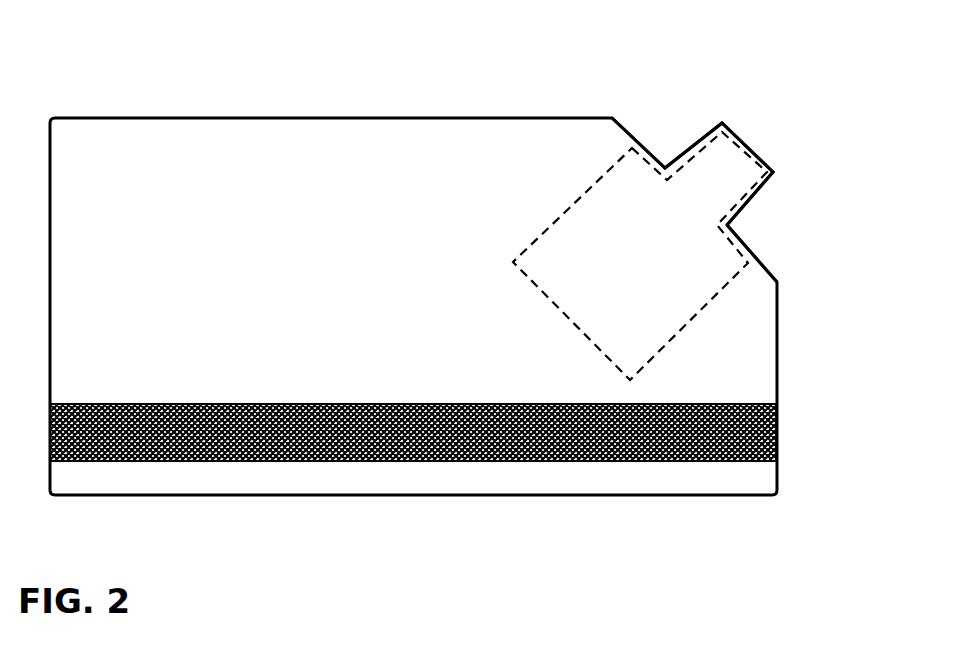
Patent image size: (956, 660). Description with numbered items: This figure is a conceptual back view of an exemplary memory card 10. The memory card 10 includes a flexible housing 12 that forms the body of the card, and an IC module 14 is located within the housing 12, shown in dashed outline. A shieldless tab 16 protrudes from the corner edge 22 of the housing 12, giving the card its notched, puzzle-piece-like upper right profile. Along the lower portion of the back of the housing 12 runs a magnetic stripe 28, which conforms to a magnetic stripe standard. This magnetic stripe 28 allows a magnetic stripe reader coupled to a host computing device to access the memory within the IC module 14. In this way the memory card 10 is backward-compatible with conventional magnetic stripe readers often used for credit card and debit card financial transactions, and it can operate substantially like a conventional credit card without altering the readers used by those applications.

The memory card 10 is at (110, 54).
The flexible housing 12 is at (332, 137).
The IC module 14 is at (585, 248).
The shieldless tab 16 is at (758, 137).
The corner edge 22 is at (758, 260).
The magnetic stripe 28 is at (762, 427).